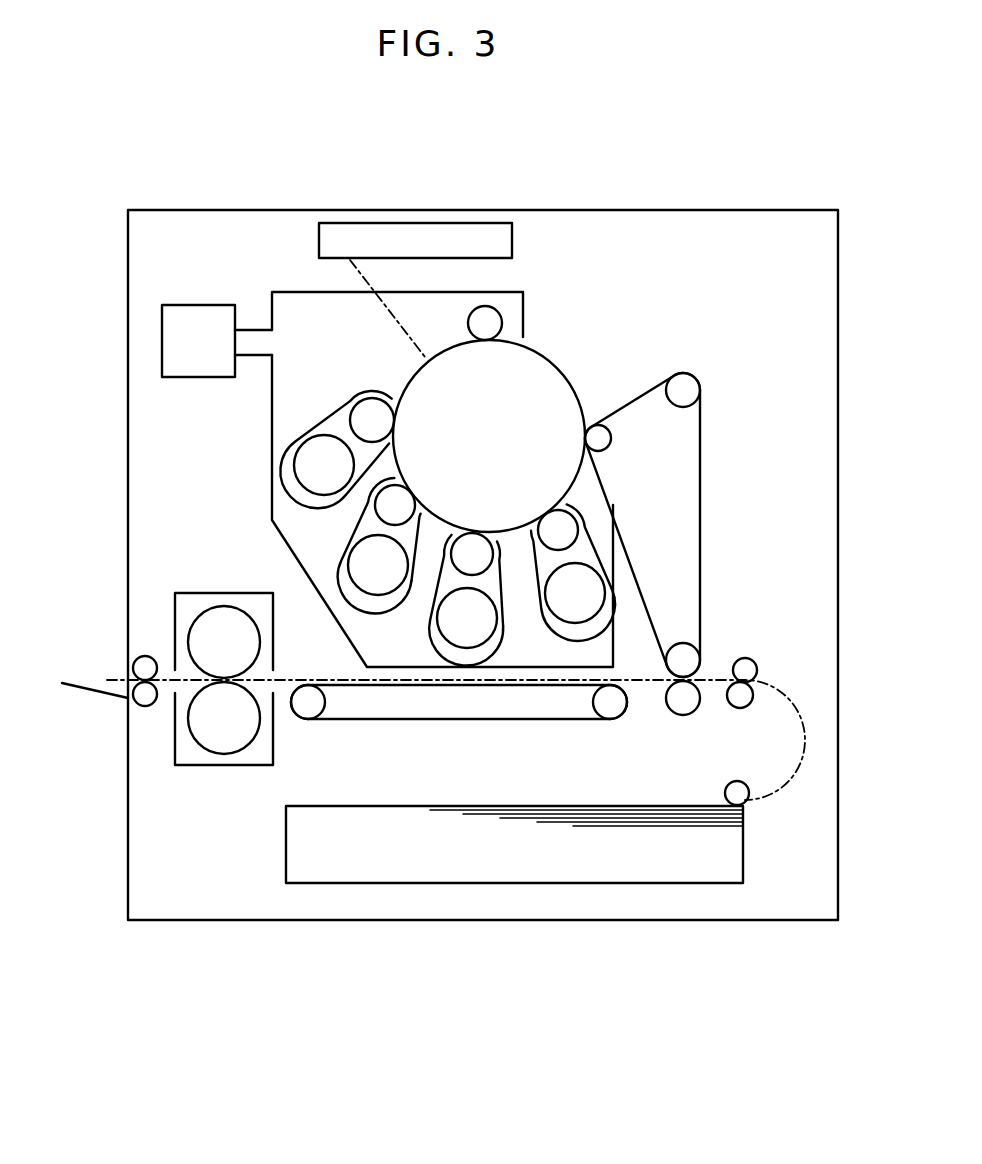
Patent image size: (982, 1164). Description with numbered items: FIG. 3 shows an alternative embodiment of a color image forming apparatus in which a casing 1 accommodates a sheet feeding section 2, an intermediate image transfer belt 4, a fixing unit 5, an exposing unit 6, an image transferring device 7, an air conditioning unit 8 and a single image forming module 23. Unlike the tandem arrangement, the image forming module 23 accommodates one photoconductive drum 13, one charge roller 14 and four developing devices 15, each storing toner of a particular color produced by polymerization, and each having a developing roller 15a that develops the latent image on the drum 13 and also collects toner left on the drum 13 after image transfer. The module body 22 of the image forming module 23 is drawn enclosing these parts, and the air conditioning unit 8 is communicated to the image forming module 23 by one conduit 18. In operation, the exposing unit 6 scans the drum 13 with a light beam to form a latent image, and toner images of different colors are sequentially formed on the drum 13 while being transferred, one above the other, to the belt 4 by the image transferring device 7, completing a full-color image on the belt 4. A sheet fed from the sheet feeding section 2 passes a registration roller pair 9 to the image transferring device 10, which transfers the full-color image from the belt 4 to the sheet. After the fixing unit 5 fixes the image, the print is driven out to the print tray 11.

The casing 1 is at (418, 212).
The sheet feeding section 2 is at (470, 885).
The intermediate image transfer belt 4 is at (700, 495).
The fixing unit 5 is at (213, 767).
The exposing unit 6 is at (512, 237).
The image transferring device 7 is at (611, 440).
The air conditioning unit 8 is at (162, 340).
The registration roller pair 9 is at (753, 659).
The image transferring device 10 is at (675, 714).
The print tray 11 is at (90, 700).
The photoconductive drum 13 is at (553, 385).
The charge roller 14 is at (502, 323).
The developing device 15 is at (308, 430).
The developing roller 15a is at (368, 398).
The conduit 18 is at (250, 330).
The process unit housing 22 is at (294, 292).
The image forming module 23 is at (254, 262).